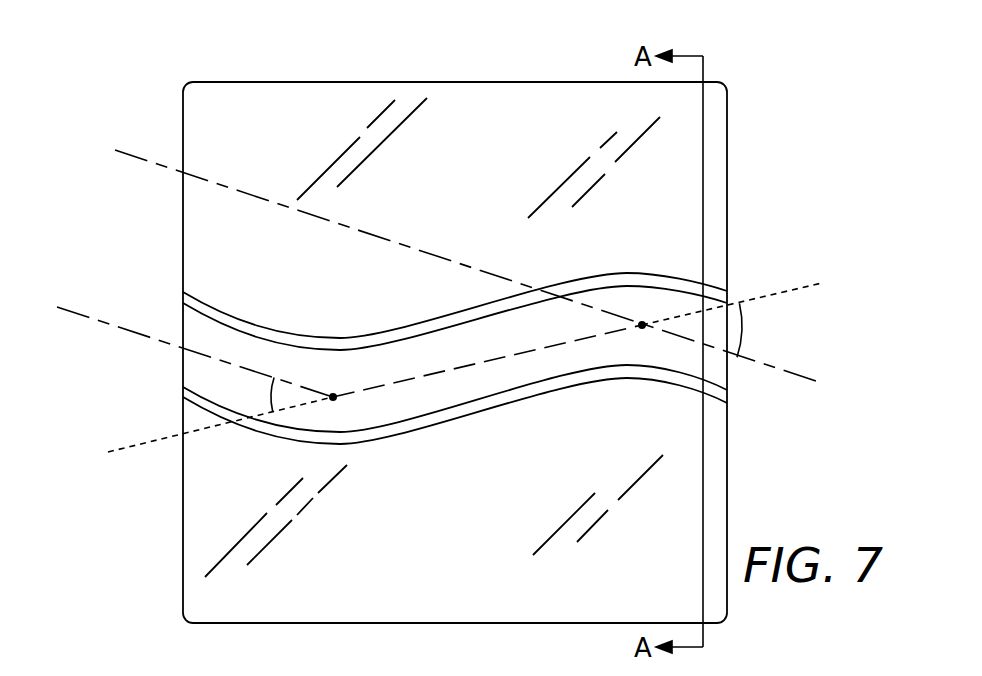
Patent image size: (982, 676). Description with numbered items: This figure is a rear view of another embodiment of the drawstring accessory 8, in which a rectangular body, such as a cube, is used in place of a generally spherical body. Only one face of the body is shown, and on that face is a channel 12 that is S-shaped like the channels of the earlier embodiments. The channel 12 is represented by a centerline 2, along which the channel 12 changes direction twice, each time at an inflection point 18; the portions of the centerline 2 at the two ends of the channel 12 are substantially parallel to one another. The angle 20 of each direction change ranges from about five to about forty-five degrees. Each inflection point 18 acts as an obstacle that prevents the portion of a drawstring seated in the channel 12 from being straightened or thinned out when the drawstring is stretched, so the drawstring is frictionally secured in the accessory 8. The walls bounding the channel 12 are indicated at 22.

The centerline 2 is at (162, 340).
The accessory 8 is at (727, 163).
The channel 12 is at (717, 370).
The inflection point 18 is at (333, 397).
The angle 20 is at (270, 392).
The channel wall 22 is at (318, 349).